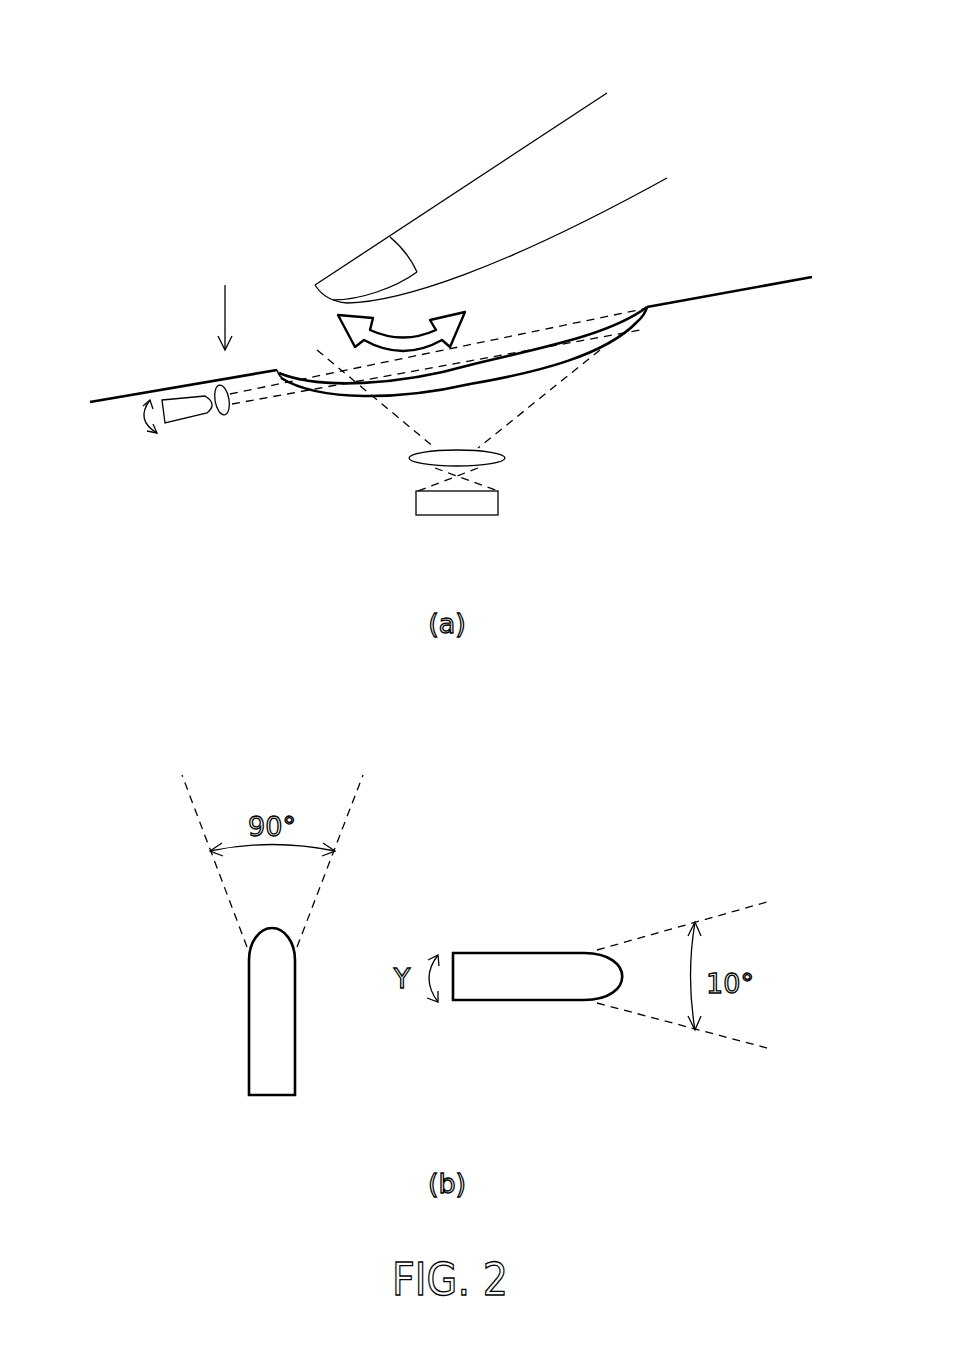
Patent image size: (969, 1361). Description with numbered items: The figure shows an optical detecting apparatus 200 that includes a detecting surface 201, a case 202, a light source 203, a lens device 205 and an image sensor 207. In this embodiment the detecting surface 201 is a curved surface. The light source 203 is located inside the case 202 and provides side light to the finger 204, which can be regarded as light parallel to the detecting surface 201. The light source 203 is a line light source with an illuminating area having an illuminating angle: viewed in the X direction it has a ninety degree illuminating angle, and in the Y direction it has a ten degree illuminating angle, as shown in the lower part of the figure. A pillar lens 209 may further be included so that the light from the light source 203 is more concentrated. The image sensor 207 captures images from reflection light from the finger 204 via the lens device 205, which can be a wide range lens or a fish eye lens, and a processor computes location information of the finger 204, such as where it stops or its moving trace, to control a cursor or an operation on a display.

The optical detecting apparatus 200 is at (732, 98).
The detecting surface 201 is at (625, 332).
The case 202 is at (752, 317).
The light source 203 is at (181, 408).
The finger 204 is at (460, 202).
The lens device 205 is at (503, 458).
The image sensor 207 is at (498, 503).
The pillar lens 209 is at (222, 415).